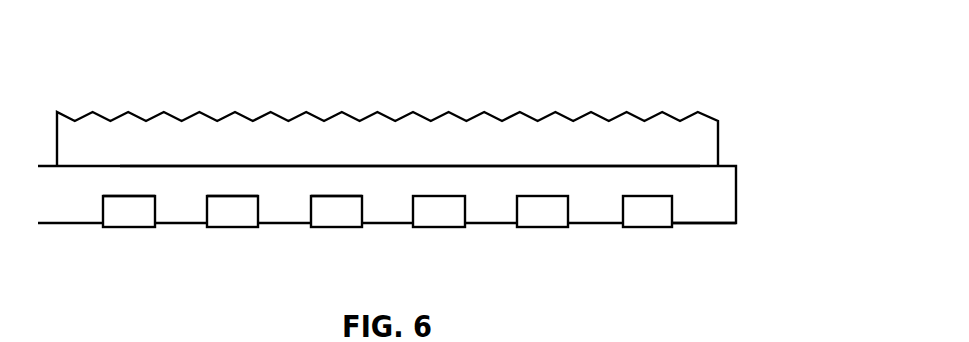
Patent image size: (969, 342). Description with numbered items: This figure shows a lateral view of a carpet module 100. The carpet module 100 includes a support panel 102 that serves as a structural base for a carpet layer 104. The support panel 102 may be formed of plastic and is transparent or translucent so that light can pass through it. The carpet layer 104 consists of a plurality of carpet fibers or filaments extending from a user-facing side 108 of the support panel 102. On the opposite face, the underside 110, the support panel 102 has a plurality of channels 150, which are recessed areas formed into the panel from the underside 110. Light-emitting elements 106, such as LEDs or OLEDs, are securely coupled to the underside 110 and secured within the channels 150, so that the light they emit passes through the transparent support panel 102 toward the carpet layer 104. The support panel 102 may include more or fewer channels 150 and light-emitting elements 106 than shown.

The carpet module 100 is at (721, 60).
The support panel 102 is at (737, 179).
The carpet layer 104 is at (720, 133).
The light-emitting element 106 is at (118, 227).
The user-facing side 108 is at (512, 166).
The underside 110 is at (707, 223).
The channels 150 is at (127, 196).